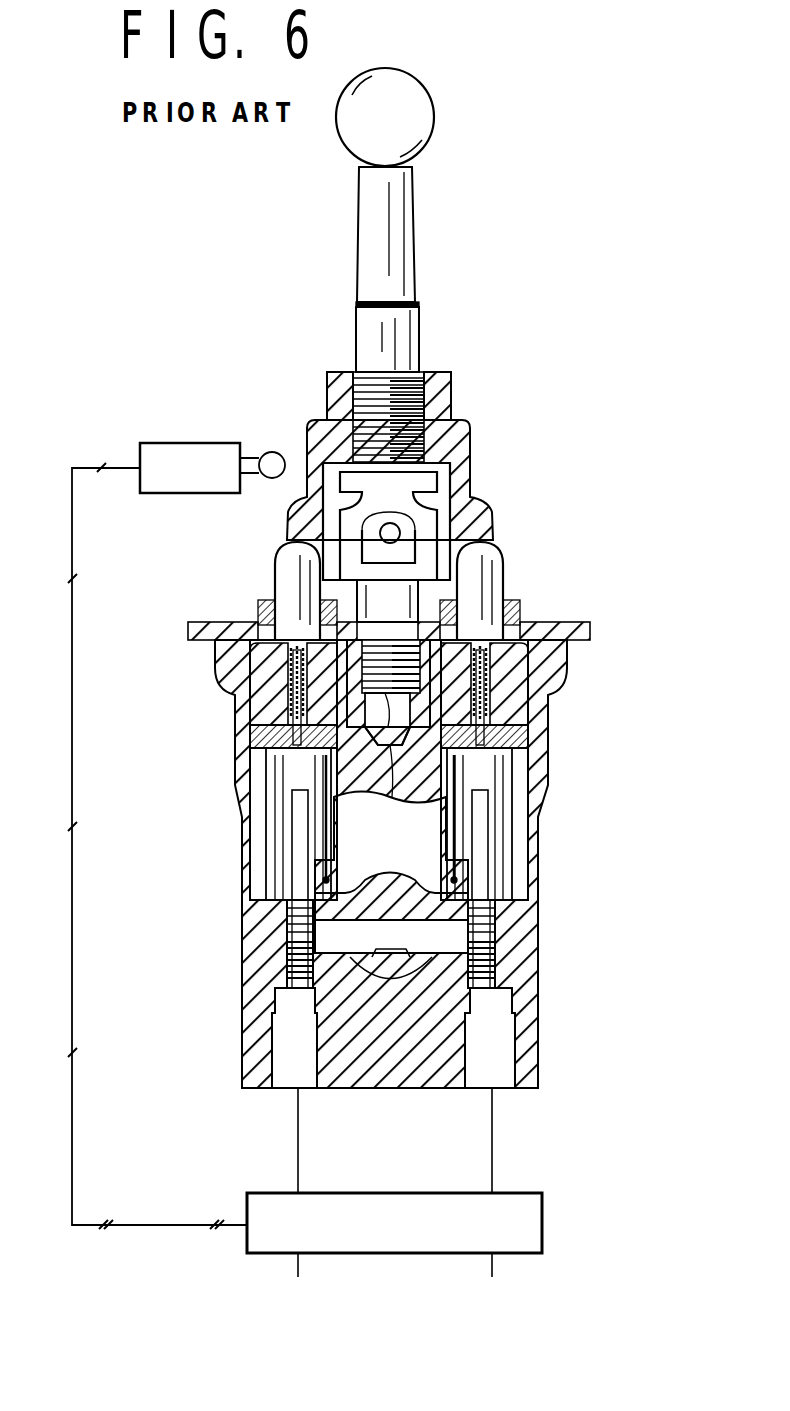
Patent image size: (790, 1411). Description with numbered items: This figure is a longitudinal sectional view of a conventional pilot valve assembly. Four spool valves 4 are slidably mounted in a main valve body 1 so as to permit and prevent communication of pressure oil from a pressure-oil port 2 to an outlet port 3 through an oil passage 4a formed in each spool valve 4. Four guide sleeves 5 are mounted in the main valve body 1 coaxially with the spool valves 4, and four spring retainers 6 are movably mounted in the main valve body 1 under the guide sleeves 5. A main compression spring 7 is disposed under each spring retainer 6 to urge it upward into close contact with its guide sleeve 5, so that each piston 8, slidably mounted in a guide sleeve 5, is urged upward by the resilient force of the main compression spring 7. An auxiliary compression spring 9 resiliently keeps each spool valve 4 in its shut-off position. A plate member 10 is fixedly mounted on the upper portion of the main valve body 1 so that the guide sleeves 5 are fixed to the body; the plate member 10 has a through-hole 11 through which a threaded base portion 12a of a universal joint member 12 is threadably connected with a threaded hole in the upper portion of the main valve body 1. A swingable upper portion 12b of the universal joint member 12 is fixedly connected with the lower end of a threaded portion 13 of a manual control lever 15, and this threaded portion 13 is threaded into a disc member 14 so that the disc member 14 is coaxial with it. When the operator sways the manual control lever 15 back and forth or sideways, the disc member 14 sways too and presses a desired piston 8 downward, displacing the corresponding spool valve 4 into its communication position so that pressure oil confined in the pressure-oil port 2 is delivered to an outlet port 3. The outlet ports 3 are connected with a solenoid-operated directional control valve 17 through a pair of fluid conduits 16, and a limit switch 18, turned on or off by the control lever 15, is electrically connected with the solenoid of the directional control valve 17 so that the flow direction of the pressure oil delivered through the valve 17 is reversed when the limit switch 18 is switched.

The main valve body 1 is at (545, 770).
The pressure-oil port 2 is at (383, 925).
The outlet port 3 is at (280, 1052).
The spool valve 4 is at (287, 915).
The oil passage 4a is at (287, 965).
The guide sleeve 5 is at (236, 672).
The spring retainer 6 is at (262, 738).
The main compression spring 7 is at (260, 762).
The piston 8 is at (280, 570).
The auxiliary compression spring 9 is at (262, 845).
The plate member 10 is at (560, 622).
The through-hole 11 is at (366, 603).
The universal joint member 12 is at (396, 531).
The threaded base portion 12a is at (390, 797).
The swingable upper portion 12b is at (425, 484).
The threaded portion 13 is at (418, 375).
The disc member 14 is at (295, 527).
The manual control lever 15 is at (400, 272).
The fluid conduit 16 is at (300, 1175).
The solenoid-operated directional control valve 17 is at (543, 1205).
The limit switch 18 is at (155, 490).